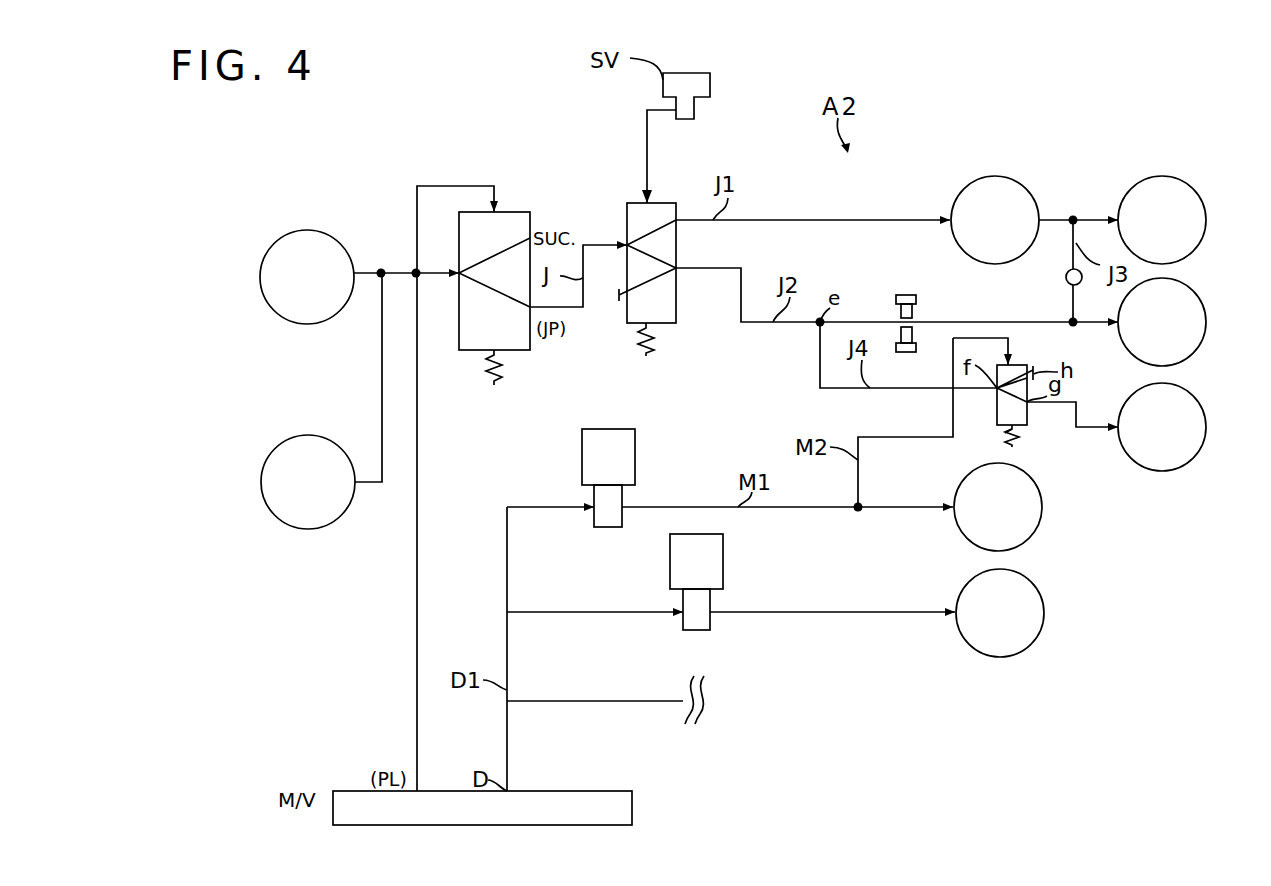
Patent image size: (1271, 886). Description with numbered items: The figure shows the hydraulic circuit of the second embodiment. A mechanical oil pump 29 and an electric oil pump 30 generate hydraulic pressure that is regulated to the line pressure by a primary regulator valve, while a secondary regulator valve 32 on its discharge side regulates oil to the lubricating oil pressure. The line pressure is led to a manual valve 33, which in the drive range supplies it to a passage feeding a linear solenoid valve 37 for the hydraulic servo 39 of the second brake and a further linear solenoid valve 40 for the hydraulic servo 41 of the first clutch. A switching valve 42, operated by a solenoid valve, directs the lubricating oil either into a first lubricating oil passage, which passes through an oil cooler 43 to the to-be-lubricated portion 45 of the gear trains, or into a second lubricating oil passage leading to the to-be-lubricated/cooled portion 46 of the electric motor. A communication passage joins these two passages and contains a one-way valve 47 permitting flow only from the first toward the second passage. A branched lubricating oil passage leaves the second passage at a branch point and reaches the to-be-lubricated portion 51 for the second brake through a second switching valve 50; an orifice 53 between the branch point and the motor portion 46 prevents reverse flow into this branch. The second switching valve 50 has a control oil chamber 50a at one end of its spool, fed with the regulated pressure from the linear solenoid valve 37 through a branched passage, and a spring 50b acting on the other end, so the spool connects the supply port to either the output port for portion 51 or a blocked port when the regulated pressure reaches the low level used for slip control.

The mechanical oil pump 29 is at (300, 231).
The electric oil pump 30 is at (303, 435).
The secondary regulator valve 32 is at (516, 212).
The manual valve 33 is at (606, 791).
The linear solenoid valve (SLB2) 37 is at (636, 437).
The hydraulic servo for the brake B-2 39 is at (1039, 494).
The linear solenoid valve (SLC1) 40 is at (723, 549).
The hydraulic servo for the clutch C-1 41 is at (1040, 598).
The switching valve 42 is at (663, 203).
The oil cooler 43 is at (990, 177).
The to-be-lubricated portion of the gear trains 45 is at (1228, 213).
The to-be-lubricated/cooled portion of the electric motor 46 is at (1206, 302).
The one-way valve 47 is at (1066, 278).
The second switching valve 50 is at (1027, 413).
The control oil chamber 50a is at (1033, 352).
The spring 50b is at (1007, 435).
The to-be-lubricated portion for the brake B-2 51 is at (1206, 422).
The orifice 53 is at (905, 295).